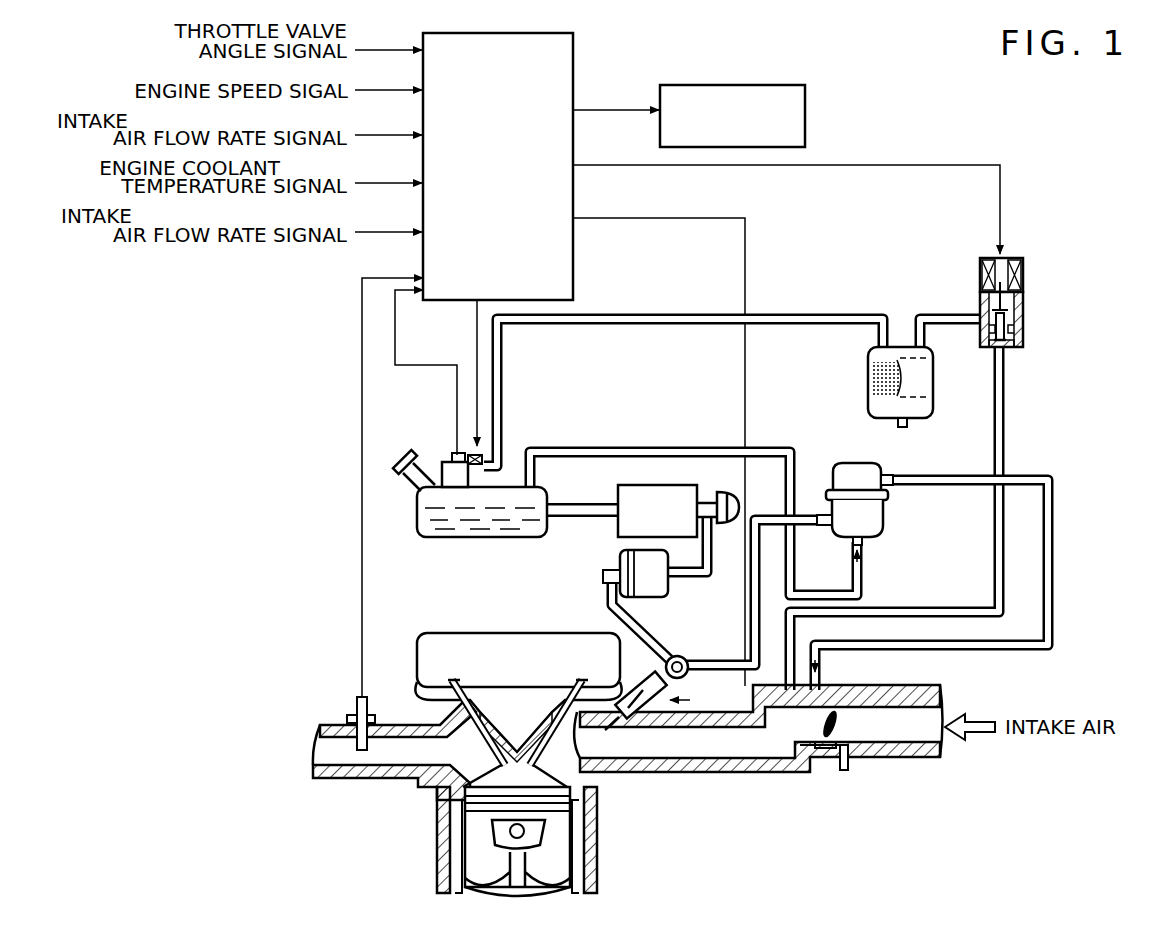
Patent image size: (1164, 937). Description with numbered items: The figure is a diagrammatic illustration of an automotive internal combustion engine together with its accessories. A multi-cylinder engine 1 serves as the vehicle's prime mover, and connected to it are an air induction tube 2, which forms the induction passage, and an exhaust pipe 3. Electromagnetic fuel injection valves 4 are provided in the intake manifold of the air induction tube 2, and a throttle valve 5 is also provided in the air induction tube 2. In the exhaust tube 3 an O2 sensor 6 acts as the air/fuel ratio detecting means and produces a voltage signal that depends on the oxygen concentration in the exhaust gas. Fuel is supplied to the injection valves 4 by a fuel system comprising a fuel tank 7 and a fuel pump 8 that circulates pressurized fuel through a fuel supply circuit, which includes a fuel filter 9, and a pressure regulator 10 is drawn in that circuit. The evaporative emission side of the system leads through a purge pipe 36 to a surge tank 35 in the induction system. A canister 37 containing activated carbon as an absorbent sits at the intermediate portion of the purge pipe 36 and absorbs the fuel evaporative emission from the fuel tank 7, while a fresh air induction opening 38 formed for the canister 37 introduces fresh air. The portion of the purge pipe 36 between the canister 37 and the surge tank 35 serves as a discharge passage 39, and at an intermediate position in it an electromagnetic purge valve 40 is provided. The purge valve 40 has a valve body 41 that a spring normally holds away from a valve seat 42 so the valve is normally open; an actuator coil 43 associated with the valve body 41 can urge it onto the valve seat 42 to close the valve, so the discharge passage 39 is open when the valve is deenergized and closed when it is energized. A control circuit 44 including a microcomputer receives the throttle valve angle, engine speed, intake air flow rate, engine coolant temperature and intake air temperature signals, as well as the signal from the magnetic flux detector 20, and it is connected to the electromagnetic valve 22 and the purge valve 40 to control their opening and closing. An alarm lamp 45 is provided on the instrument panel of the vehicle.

The multi-cylinder engine 1 is at (598, 853).
The air induction tube 2 is at (641, 772).
The exhaust pipe 3 is at (348, 780).
The electromagnetic fuel injection valve 4 is at (650, 658).
The throttle valve 5 is at (838, 718).
The O2 sensor 6 is at (320, 735).
The fuel tank 7 is at (423, 540).
The fuel pump 8 is at (616, 488).
The fuel filter 9 is at (668, 588).
The pressure regulator 10 is at (884, 520).
The magnetic flux detector 20 is at (455, 455).
The electromagnetic valve 22 is at (483, 456).
The surge tank 35 is at (805, 770).
The purge pipe 36 is at (924, 310).
The canister 37 is at (932, 403).
The fresh air induction opening 38 is at (898, 426).
The discharge passage 39 is at (905, 285).
The purge valve 40 is at (1024, 332).
The valve body 41 is at (1015, 303).
The valve seat 42 is at (1013, 346).
The actuator coil 43 is at (1025, 268).
The control circuit 44 is at (575, 60).
The alarm lamp 45 is at (806, 120).